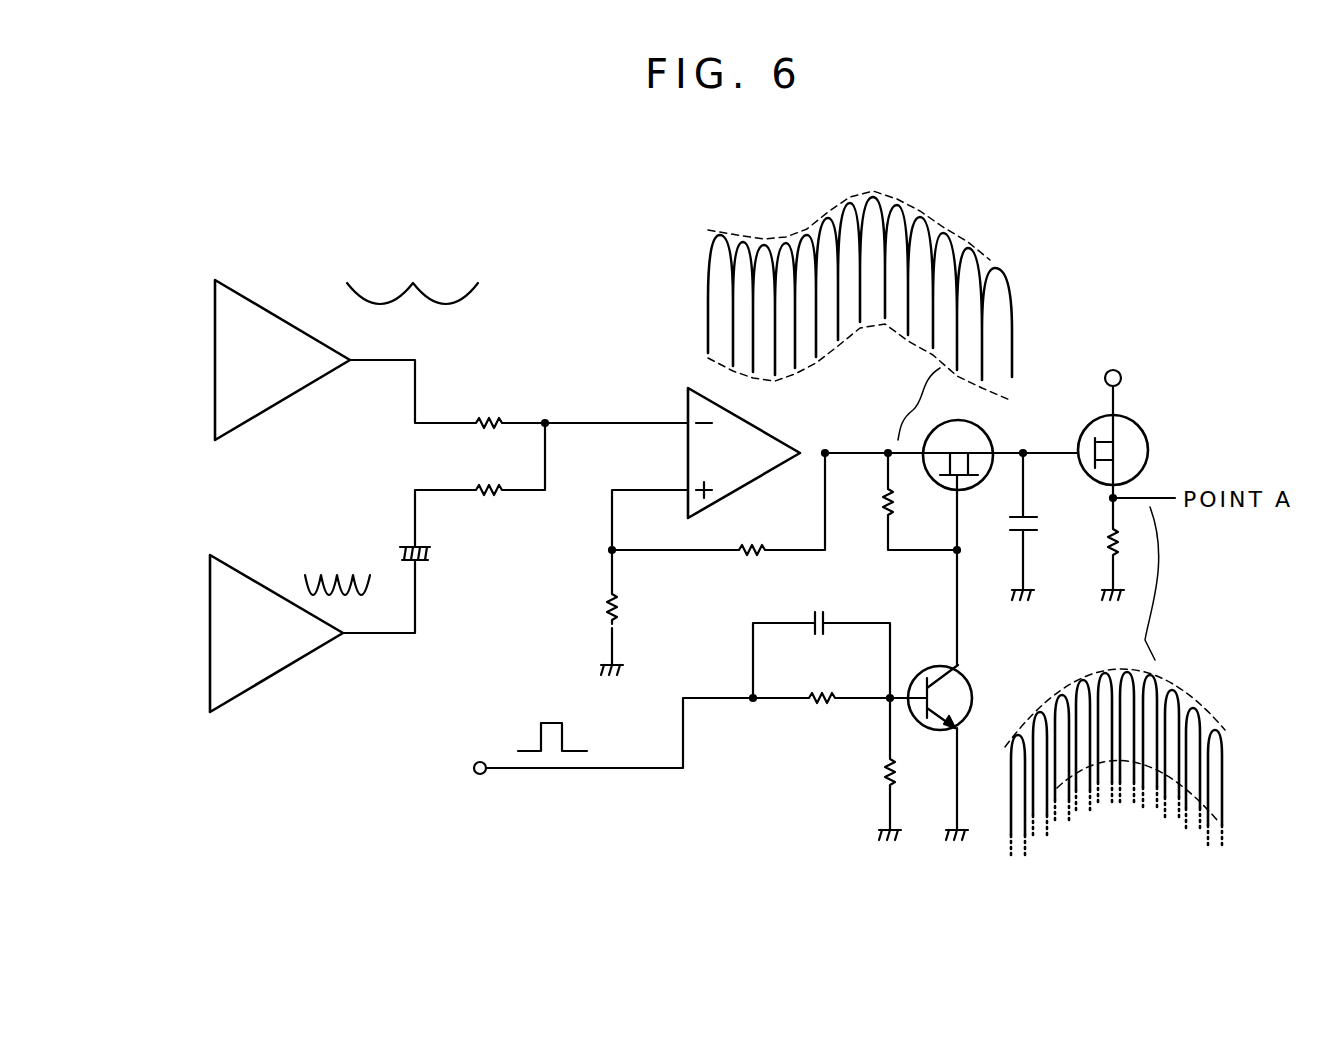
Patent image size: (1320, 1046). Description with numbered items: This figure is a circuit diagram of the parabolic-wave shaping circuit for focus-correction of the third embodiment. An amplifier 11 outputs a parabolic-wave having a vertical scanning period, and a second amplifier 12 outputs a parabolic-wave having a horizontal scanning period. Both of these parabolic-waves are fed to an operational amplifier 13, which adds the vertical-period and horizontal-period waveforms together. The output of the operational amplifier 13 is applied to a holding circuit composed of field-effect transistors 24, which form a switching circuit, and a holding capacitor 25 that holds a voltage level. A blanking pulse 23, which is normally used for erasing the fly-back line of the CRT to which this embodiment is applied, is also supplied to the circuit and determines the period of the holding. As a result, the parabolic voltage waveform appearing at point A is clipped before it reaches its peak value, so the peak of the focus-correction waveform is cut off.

The amplifier 11 is at (213, 338).
The amplifier 12 is at (207, 608).
The operational amplifier 13 is at (747, 485).
The blanking pulse 23 is at (625, 773).
The field-effect transistors 24 is at (1080, 437).
The holding capacitor 25 is at (1005, 530).